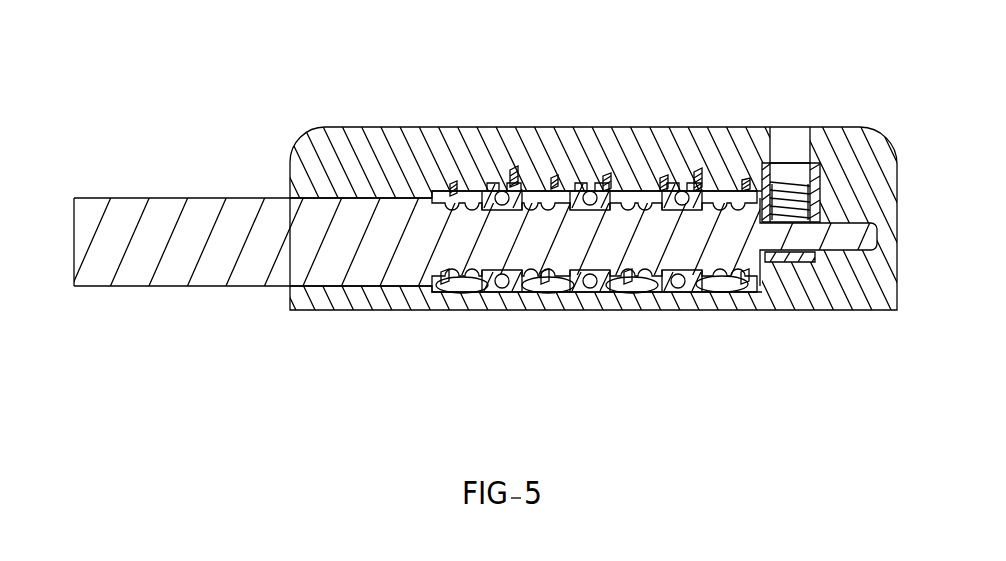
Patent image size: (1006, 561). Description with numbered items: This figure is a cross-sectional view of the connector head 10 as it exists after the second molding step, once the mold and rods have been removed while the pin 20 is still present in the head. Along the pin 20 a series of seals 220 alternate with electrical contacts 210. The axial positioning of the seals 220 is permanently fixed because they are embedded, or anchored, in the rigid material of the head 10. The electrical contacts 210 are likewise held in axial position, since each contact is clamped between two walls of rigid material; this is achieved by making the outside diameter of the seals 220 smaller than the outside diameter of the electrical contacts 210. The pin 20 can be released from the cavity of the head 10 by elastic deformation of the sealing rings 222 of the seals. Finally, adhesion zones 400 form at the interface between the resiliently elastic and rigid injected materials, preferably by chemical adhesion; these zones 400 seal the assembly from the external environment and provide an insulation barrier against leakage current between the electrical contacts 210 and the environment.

The connector head 10 is at (880, 130).
The pin 20 is at (241, 303).
The electrical contact 210 is at (510, 186).
The seal 220 is at (454, 184).
The sealing ring 222 is at (445, 284).
The adhesion zone 400 is at (470, 288).